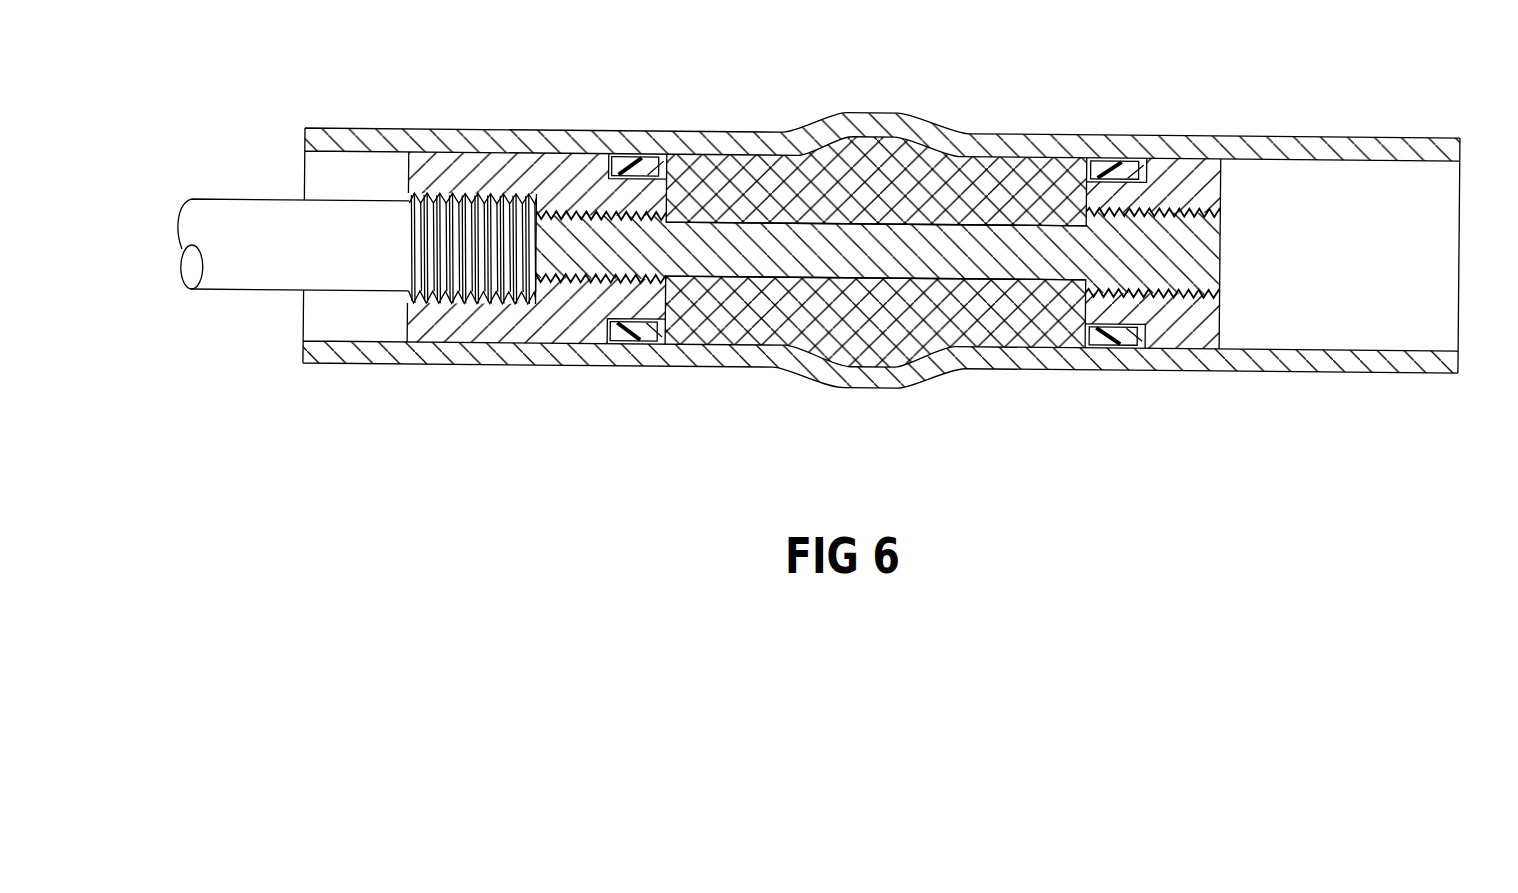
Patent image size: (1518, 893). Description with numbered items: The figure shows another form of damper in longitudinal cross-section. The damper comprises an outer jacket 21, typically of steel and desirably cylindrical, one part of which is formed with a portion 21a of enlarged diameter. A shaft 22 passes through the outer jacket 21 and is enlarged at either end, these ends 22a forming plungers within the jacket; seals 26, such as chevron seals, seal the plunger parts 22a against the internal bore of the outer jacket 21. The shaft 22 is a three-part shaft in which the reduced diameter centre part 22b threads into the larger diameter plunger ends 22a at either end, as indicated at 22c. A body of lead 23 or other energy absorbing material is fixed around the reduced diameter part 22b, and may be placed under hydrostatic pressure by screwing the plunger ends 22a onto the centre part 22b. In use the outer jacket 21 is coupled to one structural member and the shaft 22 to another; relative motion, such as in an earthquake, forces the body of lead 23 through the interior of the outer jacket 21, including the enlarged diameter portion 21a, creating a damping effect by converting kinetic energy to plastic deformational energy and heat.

The outer jacket 21 is at (694, 132).
The enlarged diameter portion 21a is at (906, 114).
The shaft 22 is at (950, 253).
The plunger ends 22a is at (488, 168).
The reduced diameter centre part 22b is at (1030, 233).
The threaded connection 22c is at (592, 253).
The body of lead 23 is at (781, 322).
The seals 26 is at (1128, 162).